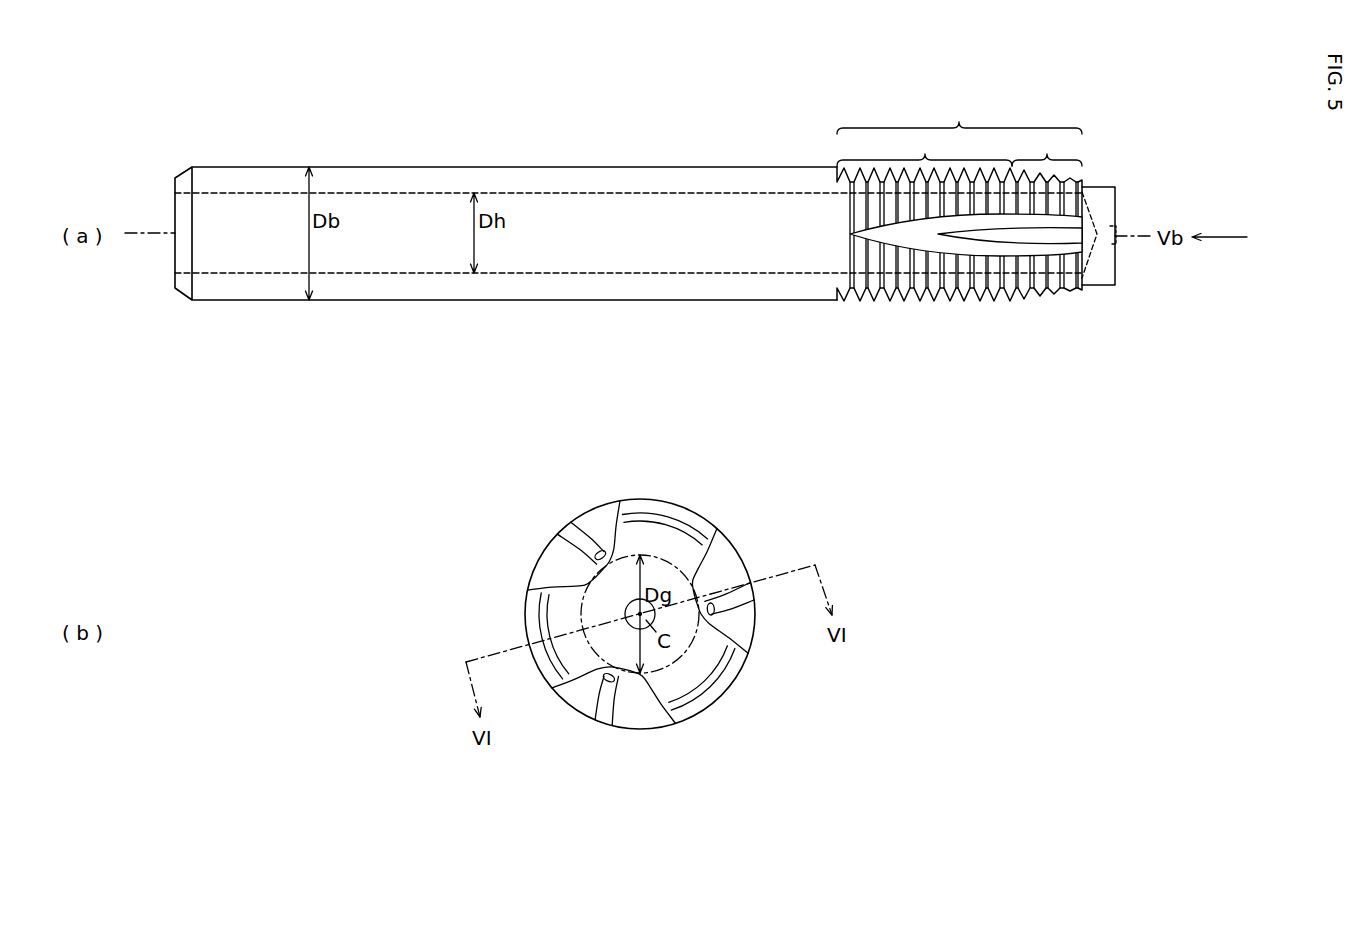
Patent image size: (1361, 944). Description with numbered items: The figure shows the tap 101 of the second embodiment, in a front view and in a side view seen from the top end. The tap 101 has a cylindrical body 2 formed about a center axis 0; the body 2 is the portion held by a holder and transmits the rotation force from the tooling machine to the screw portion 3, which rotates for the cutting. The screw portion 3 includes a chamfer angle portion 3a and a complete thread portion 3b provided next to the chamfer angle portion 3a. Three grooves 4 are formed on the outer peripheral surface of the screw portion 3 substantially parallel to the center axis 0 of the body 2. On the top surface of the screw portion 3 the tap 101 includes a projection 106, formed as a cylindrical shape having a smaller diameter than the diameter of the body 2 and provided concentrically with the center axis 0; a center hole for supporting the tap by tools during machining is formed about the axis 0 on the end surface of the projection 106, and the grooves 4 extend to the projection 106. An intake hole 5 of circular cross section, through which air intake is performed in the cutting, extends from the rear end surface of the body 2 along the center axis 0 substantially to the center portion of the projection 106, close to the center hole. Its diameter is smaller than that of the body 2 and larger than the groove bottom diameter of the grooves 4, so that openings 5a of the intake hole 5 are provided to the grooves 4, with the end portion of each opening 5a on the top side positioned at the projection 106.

The tap 101 is at (1112, 115).
The center axis 0 is at (133, 227).
The body 2 is at (386, 166).
The screw portion 3 is at (490, 617).
The chamfer angle portion 3a is at (518, 677).
The complete thread portion 3b is at (553, 720).
The groove 4 is at (1118, 228).
The intake hole 5 is at (601, 205).
The opening 5a is at (1084, 246).
The projection 106 is at (1100, 190).